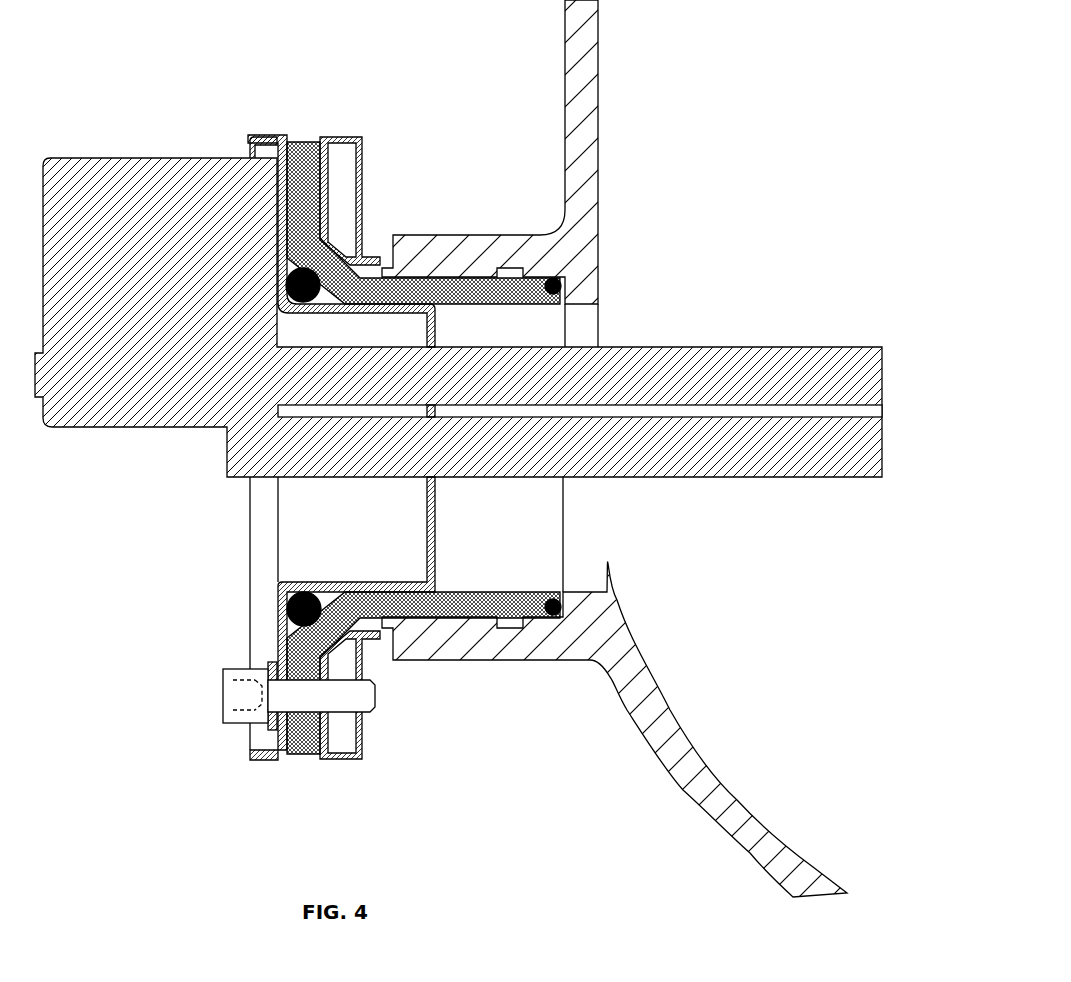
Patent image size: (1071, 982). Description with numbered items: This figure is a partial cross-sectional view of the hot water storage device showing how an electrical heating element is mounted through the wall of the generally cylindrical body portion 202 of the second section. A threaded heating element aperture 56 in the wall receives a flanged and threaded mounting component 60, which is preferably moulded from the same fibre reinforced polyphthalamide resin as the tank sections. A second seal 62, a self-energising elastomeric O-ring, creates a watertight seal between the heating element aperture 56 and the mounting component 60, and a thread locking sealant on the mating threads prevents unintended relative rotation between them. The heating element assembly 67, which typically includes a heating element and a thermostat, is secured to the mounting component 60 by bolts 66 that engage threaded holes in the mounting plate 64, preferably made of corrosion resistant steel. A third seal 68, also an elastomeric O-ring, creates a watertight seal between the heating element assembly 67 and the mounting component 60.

The heating element aperture 56 is at (616, 517).
The mounting component 60 is at (298, 135).
The second seal 62 is at (566, 609).
The mounting plate 64 is at (347, 131).
The bolts 66 is at (230, 664).
The heating element assembly 67 is at (165, 153).
The third seal 68 is at (283, 598).
The body portion 202 is at (605, 126).